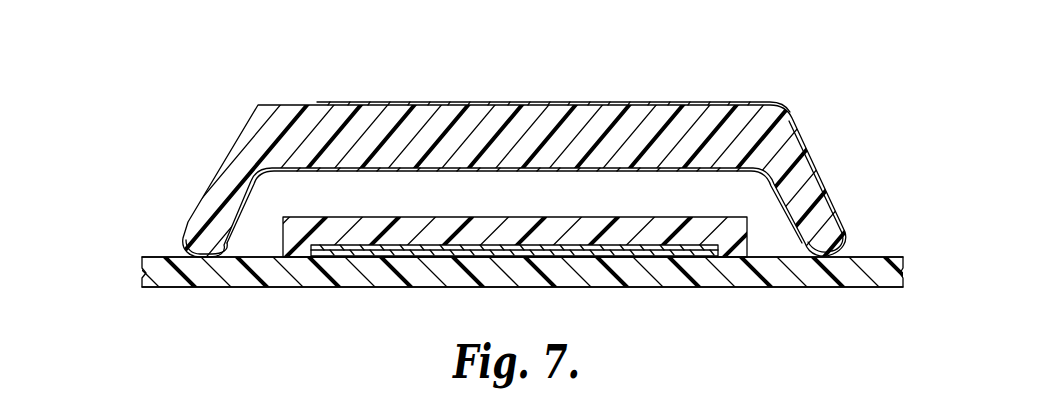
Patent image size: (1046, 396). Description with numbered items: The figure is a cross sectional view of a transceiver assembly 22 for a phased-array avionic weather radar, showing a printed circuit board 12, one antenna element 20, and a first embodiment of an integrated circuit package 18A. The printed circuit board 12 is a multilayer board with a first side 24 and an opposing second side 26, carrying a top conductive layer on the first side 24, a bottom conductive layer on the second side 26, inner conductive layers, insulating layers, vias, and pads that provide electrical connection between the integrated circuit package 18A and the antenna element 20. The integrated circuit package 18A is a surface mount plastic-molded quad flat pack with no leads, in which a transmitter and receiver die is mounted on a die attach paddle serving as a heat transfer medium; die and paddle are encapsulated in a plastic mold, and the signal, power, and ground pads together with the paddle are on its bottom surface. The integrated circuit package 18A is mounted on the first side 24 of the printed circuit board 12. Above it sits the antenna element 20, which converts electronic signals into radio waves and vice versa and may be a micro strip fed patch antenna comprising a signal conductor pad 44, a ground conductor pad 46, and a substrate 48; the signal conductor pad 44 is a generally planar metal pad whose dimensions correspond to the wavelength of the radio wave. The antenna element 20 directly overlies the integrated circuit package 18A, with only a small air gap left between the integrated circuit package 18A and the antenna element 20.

The printed circuit board 12 is at (126, 287).
The integrated circuit package 18A is at (430, 205).
The antenna element 20 is at (670, 75).
The transceiver assembly 22 is at (292, 50).
The first side 24 is at (161, 256).
The second side 26 is at (215, 288).
The signal conductor pad 44 is at (442, 104).
The ground conductor pad 46 is at (563, 170).
The substrate 48 is at (256, 104).